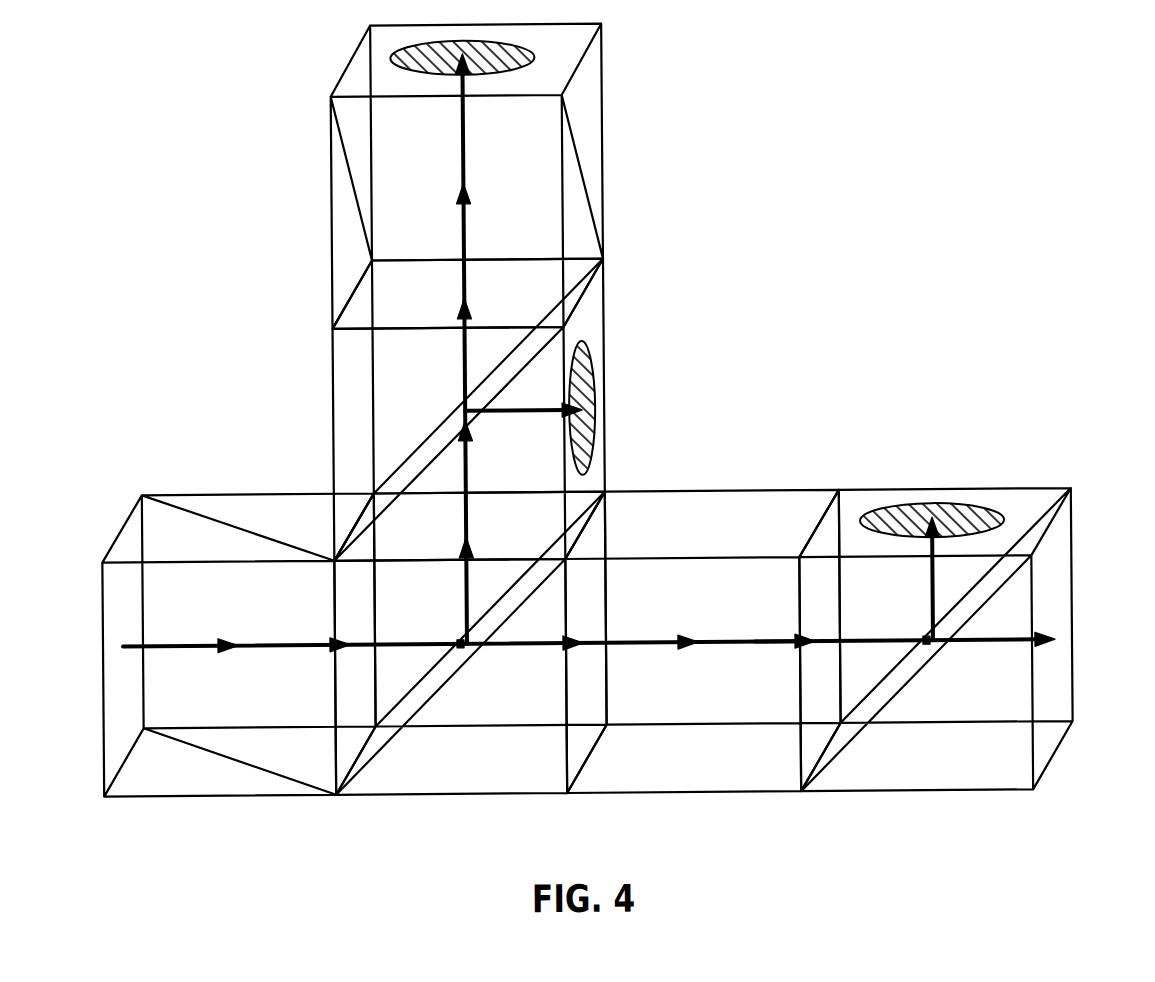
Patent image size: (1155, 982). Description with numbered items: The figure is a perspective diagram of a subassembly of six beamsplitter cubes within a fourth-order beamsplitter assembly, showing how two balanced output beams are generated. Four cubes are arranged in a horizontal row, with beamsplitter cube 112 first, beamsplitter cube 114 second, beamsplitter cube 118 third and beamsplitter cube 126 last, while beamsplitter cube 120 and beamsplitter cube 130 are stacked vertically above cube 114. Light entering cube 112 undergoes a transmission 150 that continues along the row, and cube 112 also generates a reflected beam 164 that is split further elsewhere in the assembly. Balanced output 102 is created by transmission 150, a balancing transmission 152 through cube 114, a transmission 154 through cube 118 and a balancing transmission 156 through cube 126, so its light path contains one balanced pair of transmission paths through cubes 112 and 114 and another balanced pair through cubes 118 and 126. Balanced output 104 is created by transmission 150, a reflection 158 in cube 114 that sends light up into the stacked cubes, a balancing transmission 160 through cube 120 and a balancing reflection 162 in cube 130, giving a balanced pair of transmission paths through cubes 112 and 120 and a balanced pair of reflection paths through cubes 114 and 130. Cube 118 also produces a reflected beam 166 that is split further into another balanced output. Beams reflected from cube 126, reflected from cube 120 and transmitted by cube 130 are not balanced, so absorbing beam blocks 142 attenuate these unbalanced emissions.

The balanced output 102 is at (1055, 641).
The balanced output 104 is at (456, 200).
The beamsplitter cube 112 is at (133, 797).
The beamsplitter cube 114 is at (378, 797).
The beamsplitter cube 118 is at (616, 797).
The beamsplitter cube 120 is at (607, 308).
The beamsplitter cube 126 is at (876, 796).
The beamsplitter cube 130 is at (607, 152).
The absorbing beam block 142 is at (540, 53).
The transmission 150 is at (322, 645).
The balancing transmission 152 is at (495, 645).
The transmission 154 is at (755, 641).
The balancing transmission 156 is at (1010, 633).
The reflection 158 is at (470, 578).
The balancing transmission 160 is at (465, 367).
The balancing reflection 162 is at (452, 200).
The reflected beam 164 is at (236, 648).
The reflected beam 166 is at (696, 647).